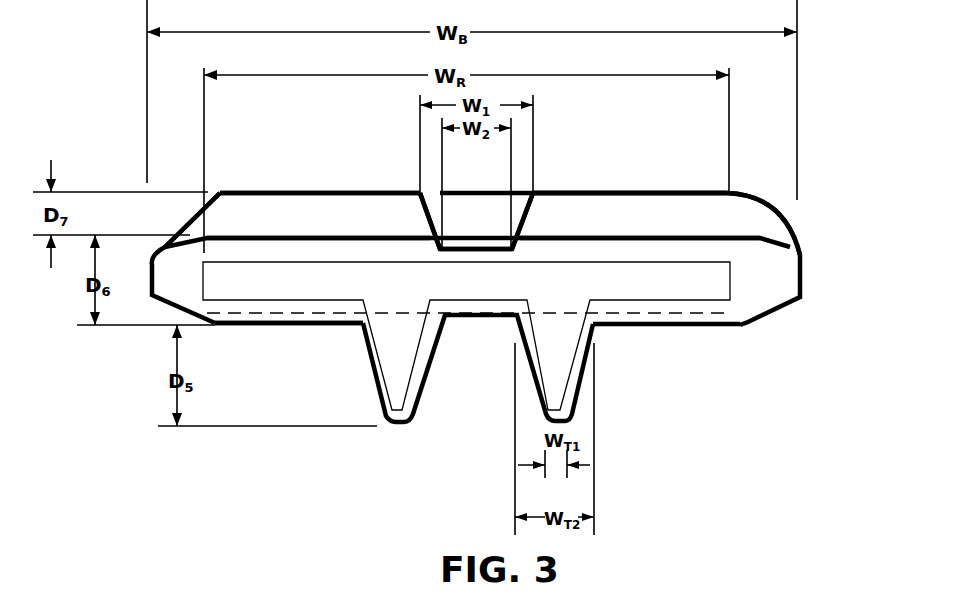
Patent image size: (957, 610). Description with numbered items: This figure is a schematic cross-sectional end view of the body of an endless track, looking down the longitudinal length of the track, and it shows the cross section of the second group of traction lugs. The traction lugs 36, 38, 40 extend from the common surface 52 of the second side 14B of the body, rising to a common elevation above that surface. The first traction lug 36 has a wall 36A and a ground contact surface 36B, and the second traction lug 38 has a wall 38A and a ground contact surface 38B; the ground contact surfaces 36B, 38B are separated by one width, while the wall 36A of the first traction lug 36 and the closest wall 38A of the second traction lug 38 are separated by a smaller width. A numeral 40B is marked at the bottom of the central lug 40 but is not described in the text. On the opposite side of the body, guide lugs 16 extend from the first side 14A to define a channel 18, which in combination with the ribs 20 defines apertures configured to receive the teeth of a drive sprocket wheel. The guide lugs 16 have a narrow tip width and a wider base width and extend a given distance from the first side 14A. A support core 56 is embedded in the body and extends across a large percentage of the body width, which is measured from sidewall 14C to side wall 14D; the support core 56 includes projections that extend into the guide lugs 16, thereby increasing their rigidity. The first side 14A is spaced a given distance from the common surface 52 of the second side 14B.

The first side 14A is at (330, 342).
The second side 14B is at (550, 180).
The sidewall 14C is at (150, 274).
The side wall 14D is at (807, 277).
The guide lugs 16 is at (378, 392).
The channel 18 is at (466, 336).
The ribs 20 is at (705, 338).
The first traction lug 36 is at (297, 220).
The wall 36A is at (187, 217).
The ground contact surface 36B is at (290, 193).
The second traction lug 38 is at (655, 220).
The wall 38A is at (530, 215).
The ground contact surface 38B is at (640, 193).
The traction lug 40 is at (476, 221).
The groove bottom 40B is at (470, 193).
The common surface 52 is at (695, 236).
The support core 56 is at (290, 300).